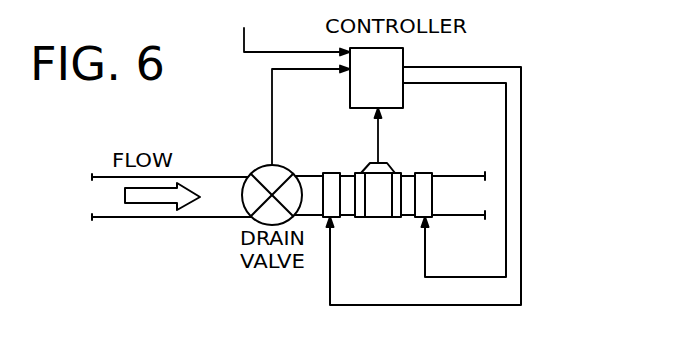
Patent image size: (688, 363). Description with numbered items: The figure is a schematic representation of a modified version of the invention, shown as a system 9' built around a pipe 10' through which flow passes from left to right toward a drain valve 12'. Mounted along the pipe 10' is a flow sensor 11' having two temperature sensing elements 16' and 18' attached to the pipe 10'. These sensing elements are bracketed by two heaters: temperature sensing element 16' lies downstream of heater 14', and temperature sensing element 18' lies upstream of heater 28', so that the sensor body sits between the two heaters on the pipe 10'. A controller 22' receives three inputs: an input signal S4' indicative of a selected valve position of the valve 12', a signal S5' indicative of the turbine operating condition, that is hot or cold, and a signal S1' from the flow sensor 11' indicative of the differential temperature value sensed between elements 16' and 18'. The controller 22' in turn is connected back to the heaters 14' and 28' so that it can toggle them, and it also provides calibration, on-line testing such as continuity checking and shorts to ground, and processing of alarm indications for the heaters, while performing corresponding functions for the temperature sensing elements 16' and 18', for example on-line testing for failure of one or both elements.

The system 9' is at (449, 186).
The pipe 10' is at (288, 211).
The flow sensor 11' is at (361, 166).
The valve 12' is at (260, 177).
The heater 14' is at (313, 173).
The temperature sensing element 16' is at (356, 215).
The temperature sensing element 18' is at (395, 215).
The controller 22' is at (376, 78).
The heater 28' is at (453, 215).
The signal S1' is at (422, 135).
The input signal S4' is at (293, 116).
The signal S5' is at (291, 31).